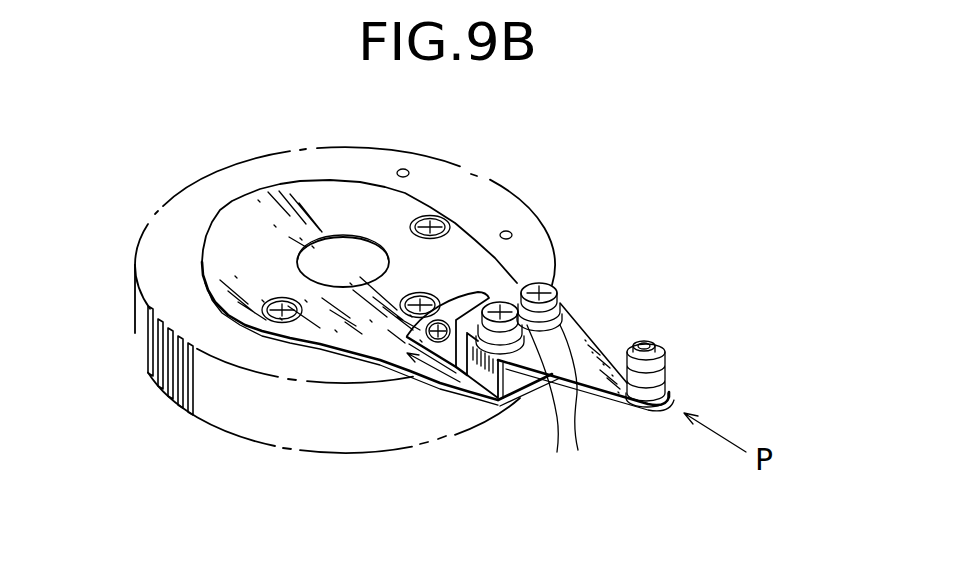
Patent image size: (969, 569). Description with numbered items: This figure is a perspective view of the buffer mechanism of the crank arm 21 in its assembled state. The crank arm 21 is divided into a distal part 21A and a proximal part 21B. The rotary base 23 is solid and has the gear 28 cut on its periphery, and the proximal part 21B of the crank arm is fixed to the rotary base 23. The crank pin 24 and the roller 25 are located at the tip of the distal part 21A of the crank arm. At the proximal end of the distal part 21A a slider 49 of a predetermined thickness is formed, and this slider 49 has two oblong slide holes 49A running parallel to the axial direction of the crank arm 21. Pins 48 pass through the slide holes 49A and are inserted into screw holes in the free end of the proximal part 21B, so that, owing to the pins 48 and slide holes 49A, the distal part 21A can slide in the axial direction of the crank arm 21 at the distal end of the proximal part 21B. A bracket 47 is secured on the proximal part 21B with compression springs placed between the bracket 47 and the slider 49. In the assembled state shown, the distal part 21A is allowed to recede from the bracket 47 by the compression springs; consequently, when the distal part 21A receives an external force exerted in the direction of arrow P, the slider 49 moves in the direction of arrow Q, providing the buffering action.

The crank arm 21 is at (470, 240).
The distal part of the crank arm 21A is at (600, 330).
The proximal part of the crank arm 21B is at (367, 340).
The rotary base 23 is at (250, 183).
The crank pin 24 is at (645, 345).
The roller 25 is at (665, 370).
The gear 28 is at (160, 393).
The bracket 47 is at (503, 283).
The pins 48 is at (553, 287).
The slider 49 is at (538, 350).
The slide holes 49A is at (572, 406).